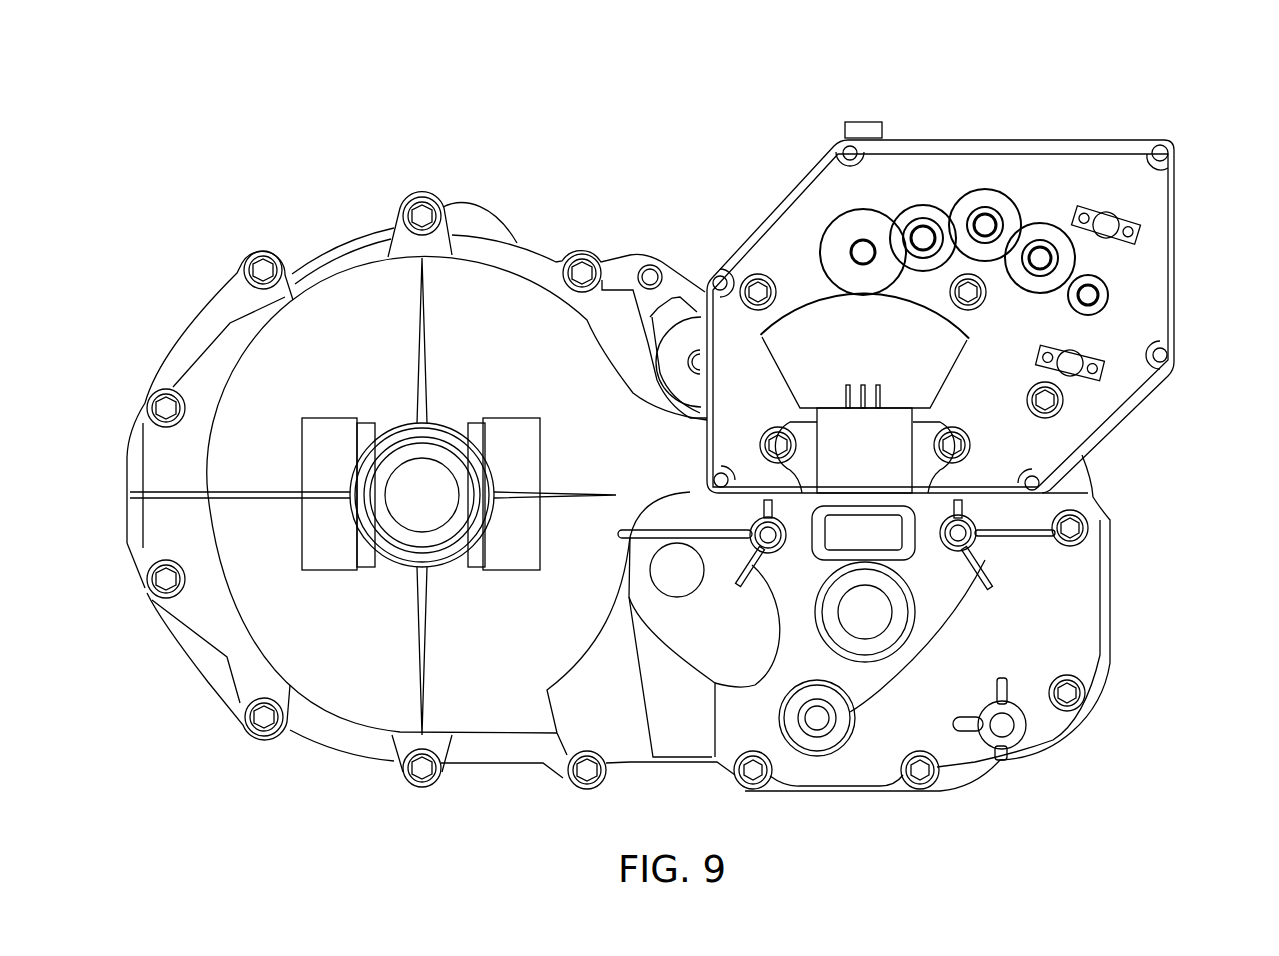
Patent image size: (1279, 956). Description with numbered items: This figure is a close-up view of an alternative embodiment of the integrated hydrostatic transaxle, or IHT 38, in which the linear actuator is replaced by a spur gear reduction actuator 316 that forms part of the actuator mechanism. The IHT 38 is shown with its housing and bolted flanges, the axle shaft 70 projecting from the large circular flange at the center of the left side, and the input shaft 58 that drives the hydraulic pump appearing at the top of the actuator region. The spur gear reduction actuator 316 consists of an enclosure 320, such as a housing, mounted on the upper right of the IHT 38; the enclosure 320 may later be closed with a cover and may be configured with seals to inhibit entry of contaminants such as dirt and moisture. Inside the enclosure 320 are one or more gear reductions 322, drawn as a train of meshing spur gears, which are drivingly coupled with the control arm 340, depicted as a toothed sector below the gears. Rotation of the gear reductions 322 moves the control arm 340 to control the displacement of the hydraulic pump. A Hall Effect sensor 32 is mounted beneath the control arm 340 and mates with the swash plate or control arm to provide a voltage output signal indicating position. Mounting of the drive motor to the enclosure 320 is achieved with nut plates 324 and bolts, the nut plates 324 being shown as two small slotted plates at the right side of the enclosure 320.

The IHT 38 is at (618, 429).
The axle shaft 70 is at (440, 509).
The spur gear reduction actuator 316 is at (753, 87).
The enclosure 320 is at (772, 205).
The input shaft 58 is at (848, 124).
The gear reductions 322 is at (968, 162).
The nut plates 324 is at (1088, 348).
The control arm 340 is at (797, 366).
The Hall Effect sensor 32 is at (850, 461).